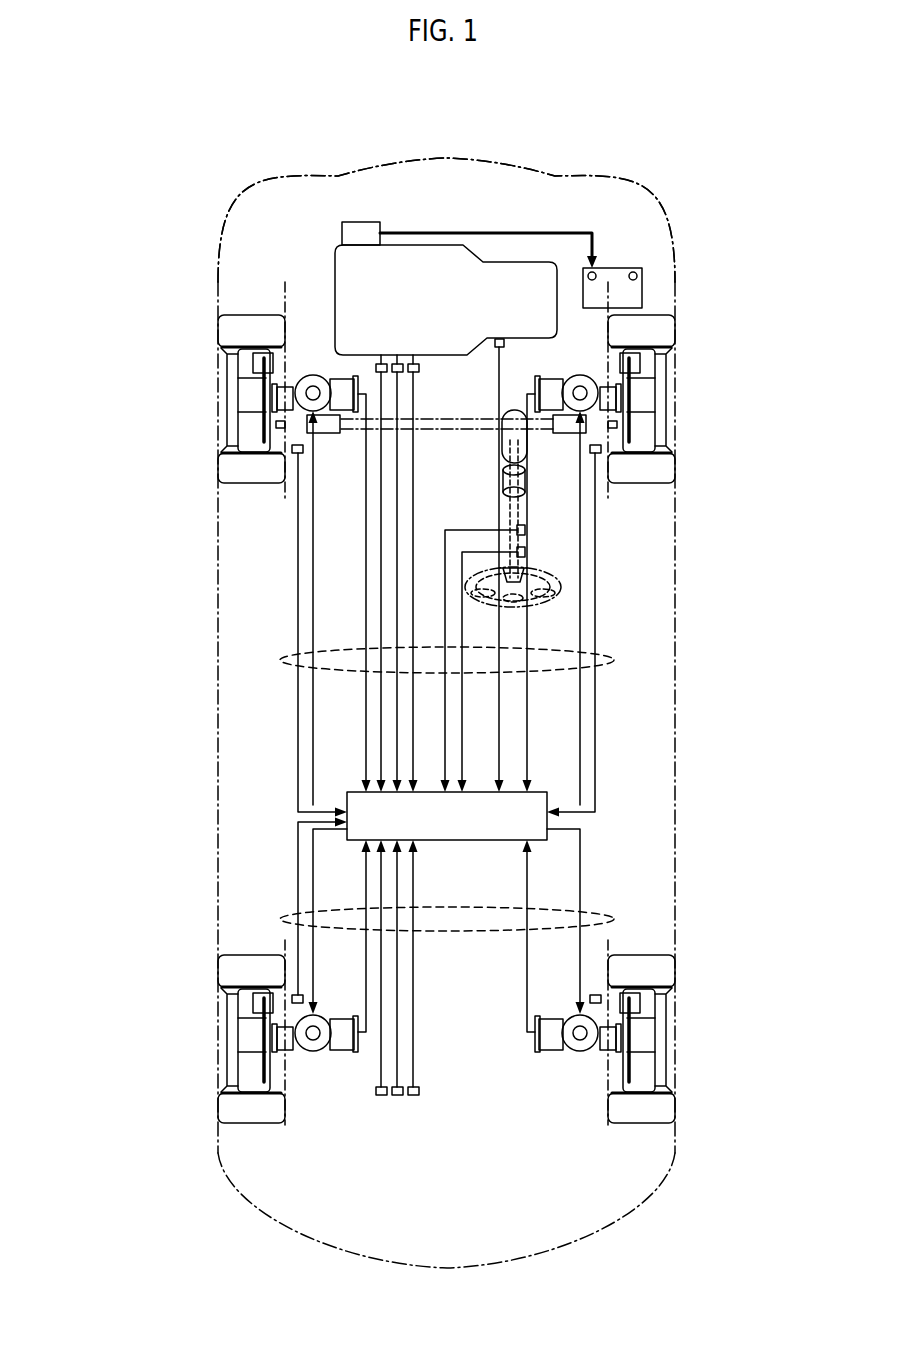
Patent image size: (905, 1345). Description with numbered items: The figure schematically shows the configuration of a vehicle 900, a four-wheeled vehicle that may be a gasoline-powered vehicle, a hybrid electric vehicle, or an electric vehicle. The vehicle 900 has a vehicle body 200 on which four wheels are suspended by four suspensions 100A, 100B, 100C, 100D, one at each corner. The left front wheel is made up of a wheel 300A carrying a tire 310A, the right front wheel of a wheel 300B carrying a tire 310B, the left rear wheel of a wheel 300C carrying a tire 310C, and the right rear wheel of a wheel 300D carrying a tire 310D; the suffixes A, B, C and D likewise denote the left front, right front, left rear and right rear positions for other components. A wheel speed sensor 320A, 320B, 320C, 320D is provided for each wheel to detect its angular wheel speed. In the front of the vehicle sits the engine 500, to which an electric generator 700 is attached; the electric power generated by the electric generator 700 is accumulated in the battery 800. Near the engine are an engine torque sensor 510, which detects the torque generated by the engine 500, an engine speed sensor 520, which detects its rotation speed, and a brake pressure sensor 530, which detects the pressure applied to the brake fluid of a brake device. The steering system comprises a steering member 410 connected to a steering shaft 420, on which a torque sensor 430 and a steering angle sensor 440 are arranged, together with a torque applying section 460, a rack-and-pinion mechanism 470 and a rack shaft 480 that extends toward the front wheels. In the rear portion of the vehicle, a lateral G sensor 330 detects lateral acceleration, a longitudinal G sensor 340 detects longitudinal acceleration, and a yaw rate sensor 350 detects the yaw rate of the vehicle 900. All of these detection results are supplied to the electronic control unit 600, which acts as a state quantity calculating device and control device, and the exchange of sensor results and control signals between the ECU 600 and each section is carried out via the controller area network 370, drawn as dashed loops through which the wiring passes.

The vehicle 900 is at (648, 112).
The vehicle body 200 is at (658, 243).
The suspension 100A is at (290, 422).
The suspension 100B is at (603, 422).
The suspension 100C is at (290, 1062).
The suspension 100D is at (603, 1062).
The wheel 300A is at (228, 360).
The wheel 300B is at (665, 360).
The wheel 300C is at (228, 1000).
The wheel 300D is at (665, 1000).
The tire 310A is at (232, 475).
The tire 310B is at (661, 475).
The tire 310C is at (232, 1114).
The tire 310D is at (661, 1114).
The wheel speed sensor 320A is at (292, 452).
The wheel speed sensor 320B is at (601, 452).
The wheel speed sensor 320C is at (292, 998).
The wheel speed sensor 320D is at (601, 998).
The lateral G sensor 330 is at (383, 1096).
The longitudinal G sensor 340 is at (399, 1096).
The yaw rate sensor 350 is at (415, 1096).
The controller area network (CAN) 370 is at (614, 660).
The steering member 410 is at (560, 592).
The steering shaft 420 is at (520, 560).
The torque sensor 430 is at (526, 552).
The steering angle sensor 440 is at (526, 530).
The torque applying section 460 is at (520, 480).
The rack-and-pinion mechanism 470 is at (503, 438).
The rack shaft 480 is at (433, 420).
The engine 500 is at (337, 293).
The engine torque sensor 510 is at (383, 363).
The engine speed sensor 520 is at (399, 363).
The brake pressure sensor 530 is at (415, 363).
The electronic control unit (ECU) 600 is at (443, 841).
The electric generator 700 is at (370, 222).
The battery 800 is at (637, 293).